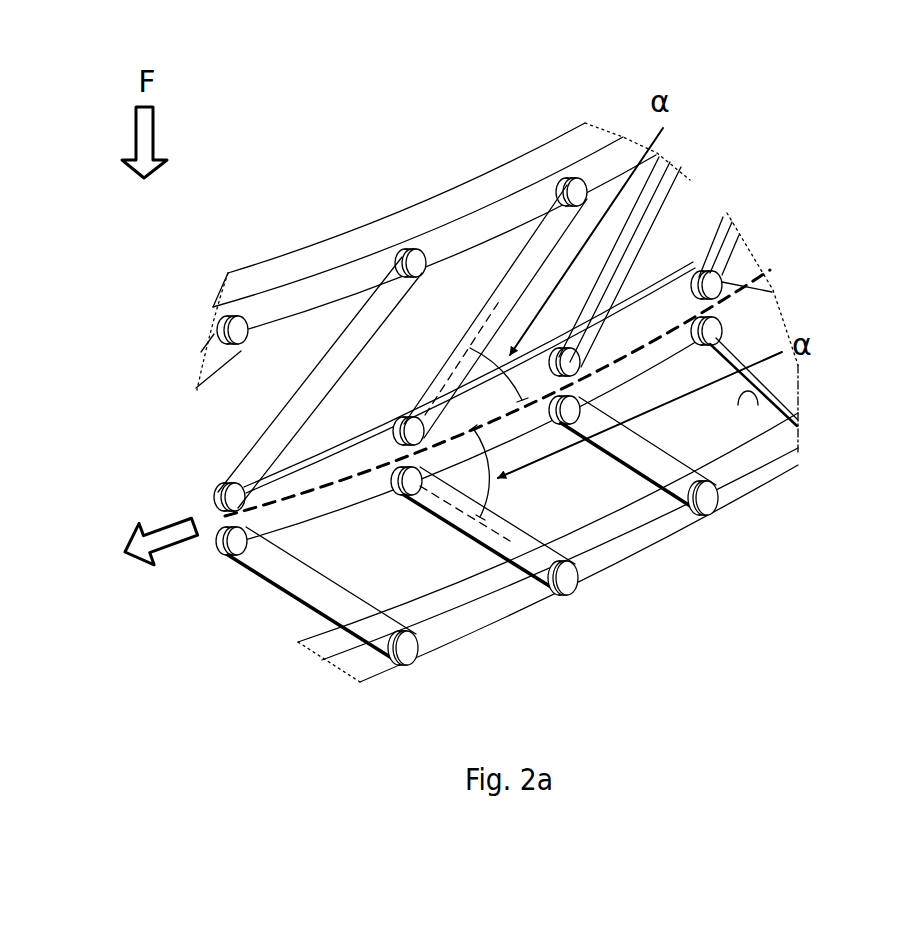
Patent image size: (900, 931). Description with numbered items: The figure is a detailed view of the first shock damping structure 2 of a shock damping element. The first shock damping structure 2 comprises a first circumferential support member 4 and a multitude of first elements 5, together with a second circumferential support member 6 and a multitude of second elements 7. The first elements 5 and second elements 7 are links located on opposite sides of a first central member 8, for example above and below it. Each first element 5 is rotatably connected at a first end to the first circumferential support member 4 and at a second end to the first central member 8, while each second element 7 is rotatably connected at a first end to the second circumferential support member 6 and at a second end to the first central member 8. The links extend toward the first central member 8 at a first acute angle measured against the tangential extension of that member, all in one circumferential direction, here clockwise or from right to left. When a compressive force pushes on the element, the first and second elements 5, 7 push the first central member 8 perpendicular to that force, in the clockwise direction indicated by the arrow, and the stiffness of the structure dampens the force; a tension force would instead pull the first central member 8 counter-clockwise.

The first shock damping structure 2 is at (742, 160).
The first circumferential support member 4 is at (430, 195).
The first elements 5 is at (521, 271).
The second circumferential support member 6 is at (745, 493).
The second elements 7 is at (637, 456).
The first central member 8 is at (312, 492).